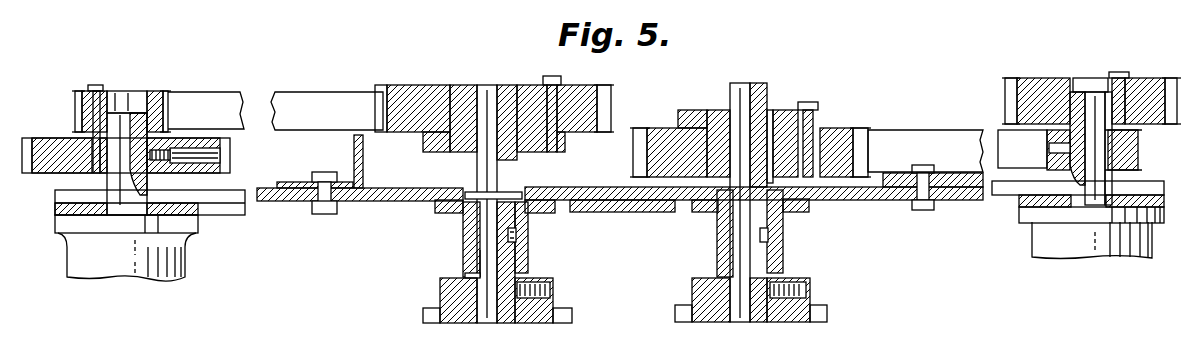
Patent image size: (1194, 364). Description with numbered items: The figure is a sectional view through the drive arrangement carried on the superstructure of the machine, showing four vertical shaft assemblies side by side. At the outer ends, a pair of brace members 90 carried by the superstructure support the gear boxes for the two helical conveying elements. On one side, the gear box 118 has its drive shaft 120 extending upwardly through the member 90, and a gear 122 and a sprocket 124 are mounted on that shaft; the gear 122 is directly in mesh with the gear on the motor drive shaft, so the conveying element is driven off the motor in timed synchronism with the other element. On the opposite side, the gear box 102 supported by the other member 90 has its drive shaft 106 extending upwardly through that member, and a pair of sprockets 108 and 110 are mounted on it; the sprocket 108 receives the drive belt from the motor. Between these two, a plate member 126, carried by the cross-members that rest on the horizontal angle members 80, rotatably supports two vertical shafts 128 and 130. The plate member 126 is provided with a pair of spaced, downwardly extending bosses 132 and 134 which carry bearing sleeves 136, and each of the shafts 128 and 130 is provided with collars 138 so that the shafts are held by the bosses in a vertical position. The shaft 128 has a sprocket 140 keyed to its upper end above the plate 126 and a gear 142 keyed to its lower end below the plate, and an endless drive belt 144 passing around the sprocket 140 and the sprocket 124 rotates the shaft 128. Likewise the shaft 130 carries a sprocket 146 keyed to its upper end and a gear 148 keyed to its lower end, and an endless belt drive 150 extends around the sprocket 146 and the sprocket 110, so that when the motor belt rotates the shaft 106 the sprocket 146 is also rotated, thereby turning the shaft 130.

The horizontal angle member 80 is at (365, 165).
The brace member 90 is at (200, 210).
The gear box 102 is at (1031, 243).
The drive shaft 106 is at (1089, 92).
The sprocket 108 is at (1037, 78).
The sprocket 110 is at (1141, 150).
The gear box 118 is at (185, 263).
The drive shaft 120 is at (120, 91).
The gear 122 is at (230, 158).
The sprocket 124 is at (150, 91).
The plate member 126 is at (575, 187).
The vertical shaft 128 is at (465, 237).
The vertical shaft 130 is at (718, 257).
The boss 132 is at (528, 253).
The boss 134 is at (785, 250).
The bearing sleeve 136 is at (465, 258).
The collar 138 is at (465, 190).
The sprocket 140 is at (572, 84).
The gear 142 is at (552, 285).
The endless drive belt 144 is at (303, 92).
The sprocket 146 is at (837, 128).
The gear 148 is at (808, 280).
The endless belt drive 150 is at (927, 130).